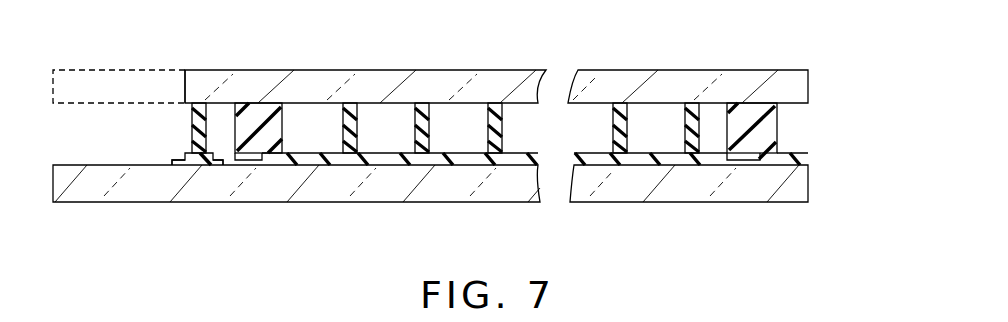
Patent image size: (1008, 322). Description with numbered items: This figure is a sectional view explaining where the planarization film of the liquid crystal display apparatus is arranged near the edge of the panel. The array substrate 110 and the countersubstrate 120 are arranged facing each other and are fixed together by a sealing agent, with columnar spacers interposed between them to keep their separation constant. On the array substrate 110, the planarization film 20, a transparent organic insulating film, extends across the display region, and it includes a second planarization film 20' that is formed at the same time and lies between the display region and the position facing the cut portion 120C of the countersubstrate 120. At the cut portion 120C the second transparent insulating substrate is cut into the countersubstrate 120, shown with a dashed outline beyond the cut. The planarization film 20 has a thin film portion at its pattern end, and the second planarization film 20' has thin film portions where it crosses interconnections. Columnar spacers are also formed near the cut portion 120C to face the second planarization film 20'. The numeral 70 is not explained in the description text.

The countersubstrate 120 is at (808, 77).
The cut portion 120C is at (186, 68).
The array substrate 110 is at (808, 180).
The gap region 70 is at (458, 118).
The planarization film 20 is at (535, 197).
The second planarization film 20' is at (197, 199).